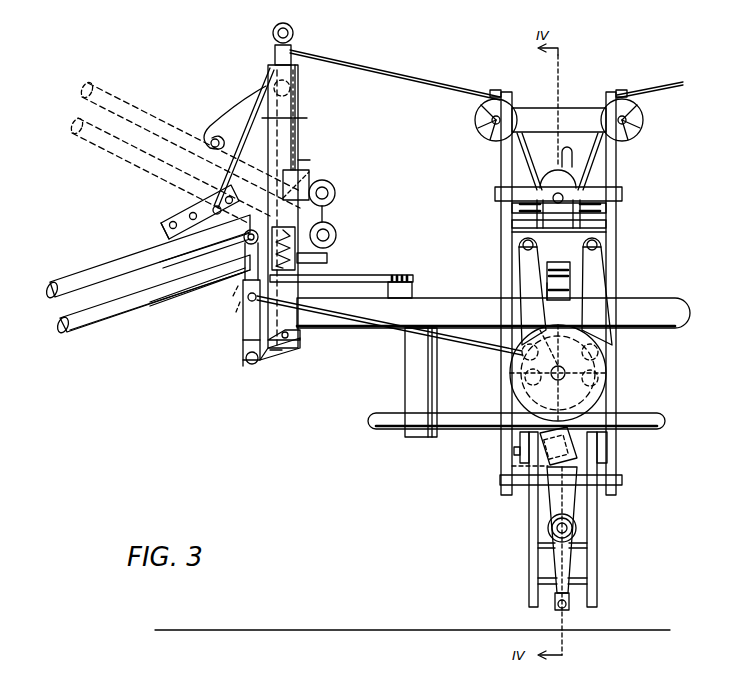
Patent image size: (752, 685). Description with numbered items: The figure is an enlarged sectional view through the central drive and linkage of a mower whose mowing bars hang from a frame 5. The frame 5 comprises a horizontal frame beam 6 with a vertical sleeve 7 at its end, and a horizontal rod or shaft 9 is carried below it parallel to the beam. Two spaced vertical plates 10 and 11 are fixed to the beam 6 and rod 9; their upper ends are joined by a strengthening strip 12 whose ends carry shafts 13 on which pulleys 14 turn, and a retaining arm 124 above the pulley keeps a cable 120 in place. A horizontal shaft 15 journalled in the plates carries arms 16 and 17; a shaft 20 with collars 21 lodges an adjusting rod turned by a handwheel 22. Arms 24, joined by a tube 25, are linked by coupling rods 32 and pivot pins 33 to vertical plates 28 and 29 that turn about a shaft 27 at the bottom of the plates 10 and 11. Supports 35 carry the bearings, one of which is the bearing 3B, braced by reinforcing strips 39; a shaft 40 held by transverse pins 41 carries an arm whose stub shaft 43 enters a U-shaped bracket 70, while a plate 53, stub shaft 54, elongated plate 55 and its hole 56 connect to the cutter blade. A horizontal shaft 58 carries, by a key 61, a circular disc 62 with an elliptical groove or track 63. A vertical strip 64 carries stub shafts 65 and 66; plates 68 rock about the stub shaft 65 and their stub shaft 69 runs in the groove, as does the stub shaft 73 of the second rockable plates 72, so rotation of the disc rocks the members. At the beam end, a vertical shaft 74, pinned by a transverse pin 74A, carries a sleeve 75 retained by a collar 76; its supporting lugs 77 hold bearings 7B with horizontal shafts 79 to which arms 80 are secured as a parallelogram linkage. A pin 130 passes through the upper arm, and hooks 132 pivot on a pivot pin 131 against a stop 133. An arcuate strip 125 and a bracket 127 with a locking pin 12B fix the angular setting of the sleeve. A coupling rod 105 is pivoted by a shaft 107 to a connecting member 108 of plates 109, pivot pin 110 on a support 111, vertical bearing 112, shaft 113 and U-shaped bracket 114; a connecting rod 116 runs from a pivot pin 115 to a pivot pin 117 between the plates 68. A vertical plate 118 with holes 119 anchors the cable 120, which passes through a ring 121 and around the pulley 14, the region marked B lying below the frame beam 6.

The frame 5 is at (446, 300).
The horizontal frame beam 6 is at (362, 330).
The vertical sleeve 7 is at (300, 344).
The roller link 7B is at (336, 200).
The horizontal rod or shaft 9 is at (455, 432).
The vertical plate 10 is at (512, 285).
The vertical plate 11 is at (616, 292).
The strengthening strip 12 is at (590, 112).
The spring 12B is at (297, 214).
The shaft 13 is at (488, 134).
The pulley 14 is at (482, 118).
The horizontal shaft 15 is at (624, 212).
The arm 16 is at (534, 224).
The arm 17 is at (606, 222).
The shaft 20 is at (496, 188).
The collar 21 is at (580, 196).
The handwheel 22 is at (556, 168).
The arm 24 is at (548, 290).
The tube 25 is at (560, 278).
The shaft 27 is at (622, 481).
The vertical plate 28 is at (530, 564).
The vertical plate 29 is at (597, 568).
The coupling rod 32 is at (520, 440).
The horizontal pivot pin 33 is at (514, 452).
The support 35 is at (548, 546).
The bearing 3B is at (574, 524).
The reinforcing strip 39 is at (536, 580).
The shaft 40 is at (552, 520).
The transverse pin 41 is at (567, 530).
The journal or stub shaft 43 is at (500, 470).
The plate 53 is at (556, 606).
The journal or stub shaft 54 is at (568, 606).
The elongated plate 55 is at (588, 556).
The hole 56 is at (534, 550).
The horizontal shaft 58 is at (532, 296).
The key 61 is at (597, 296).
The circular disc 62 is at (606, 358).
The groove or track 63 is at (600, 396).
The vertically disposed strip 64 is at (604, 240).
The stub shaft or journal 65 is at (520, 246).
The stub shaft or journal 66 is at (600, 250).
The plate 68 is at (522, 270).
The stub shaft or journal 69 is at (525, 377).
The U-shaped bracket 70 is at (568, 470).
The plate 72 is at (612, 300).
The stub shaft or journal 73 is at (598, 378).
The vertical shaft 74 is at (300, 140).
The transverse pin 74A is at (300, 352).
The sleeve 75 is at (300, 157).
The ring or collar 76 is at (300, 66).
The supporting lug 77 is at (316, 180).
The horizontal shaft 79 is at (337, 237).
The arm 80 is at (82, 92).
The coupling rod 105 is at (148, 300).
The shaft 107 is at (196, 290).
The connecting member 108 is at (243, 346).
The plate 109 is at (244, 358).
The pivot pin 110 is at (252, 366).
The support 111 is at (282, 352).
The vertical bearing 112 is at (218, 297).
The shaft 113 is at (220, 314).
The U-shaped bracket 114 is at (187, 250).
The pivot pin 115 is at (244, 312).
The connecting rod 116 is at (392, 330).
The pivot pin 117 is at (522, 358).
The vertical plate 118 is at (182, 207).
The hole 119 is at (166, 226).
The cable 120 is at (420, 72).
The ring 121 is at (292, 30).
The retaining arm 124 is at (496, 90).
The arcuate strip 125 is at (392, 274).
The bracket 127 is at (310, 262).
The pin 130 is at (210, 206).
The horizontal pivot pin 131 is at (290, 93).
The hook 132 is at (252, 108).
The stop 133 is at (301, 117).
The bracket B is at (408, 384).